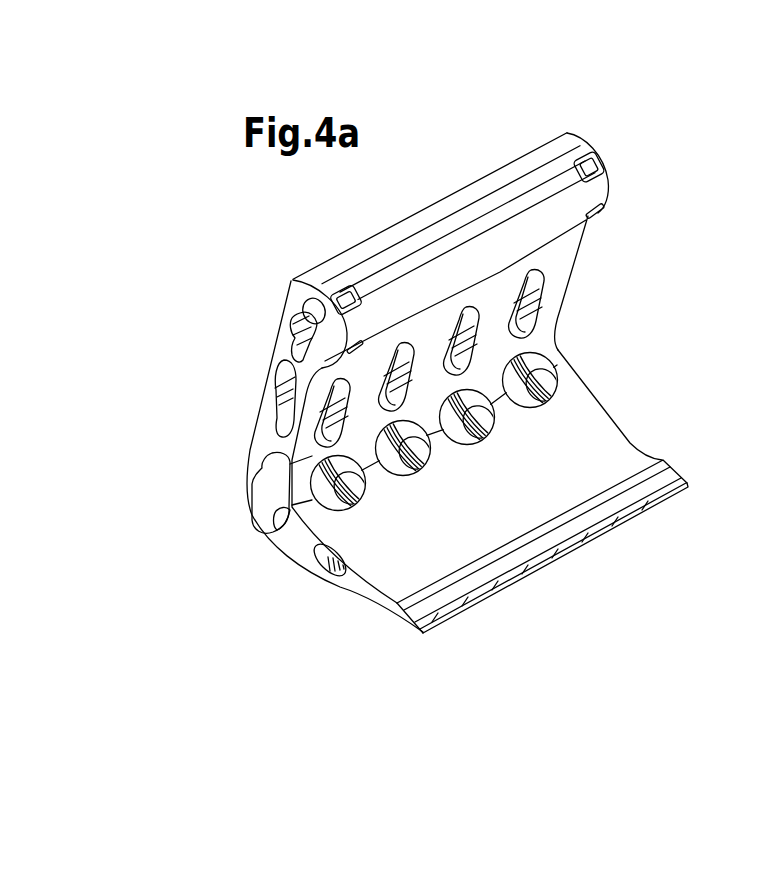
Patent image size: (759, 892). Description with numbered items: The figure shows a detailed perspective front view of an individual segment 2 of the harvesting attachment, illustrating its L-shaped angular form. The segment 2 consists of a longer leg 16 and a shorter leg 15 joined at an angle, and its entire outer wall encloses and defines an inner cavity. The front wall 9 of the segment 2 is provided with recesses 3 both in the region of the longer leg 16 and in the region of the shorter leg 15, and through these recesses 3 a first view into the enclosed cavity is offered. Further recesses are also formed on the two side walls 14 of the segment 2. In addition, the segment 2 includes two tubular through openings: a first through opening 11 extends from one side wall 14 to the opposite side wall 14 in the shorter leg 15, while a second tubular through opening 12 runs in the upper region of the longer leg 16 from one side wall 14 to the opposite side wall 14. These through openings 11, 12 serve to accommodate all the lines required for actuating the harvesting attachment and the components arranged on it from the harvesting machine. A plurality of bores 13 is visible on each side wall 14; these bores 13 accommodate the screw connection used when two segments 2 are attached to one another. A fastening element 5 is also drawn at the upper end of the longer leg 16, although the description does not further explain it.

The segment 2 is at (294, 252).
The recesses 3 is at (558, 365).
The fastening clip 5 is at (592, 162).
The front wall 9 is at (586, 590).
The first through opening 11 is at (323, 574).
The second tubular through opening 12 is at (305, 305).
The bores 13 is at (253, 459).
The side walls 14 is at (268, 433).
The shorter leg 15 is at (608, 420).
The longer leg 16 is at (573, 257).